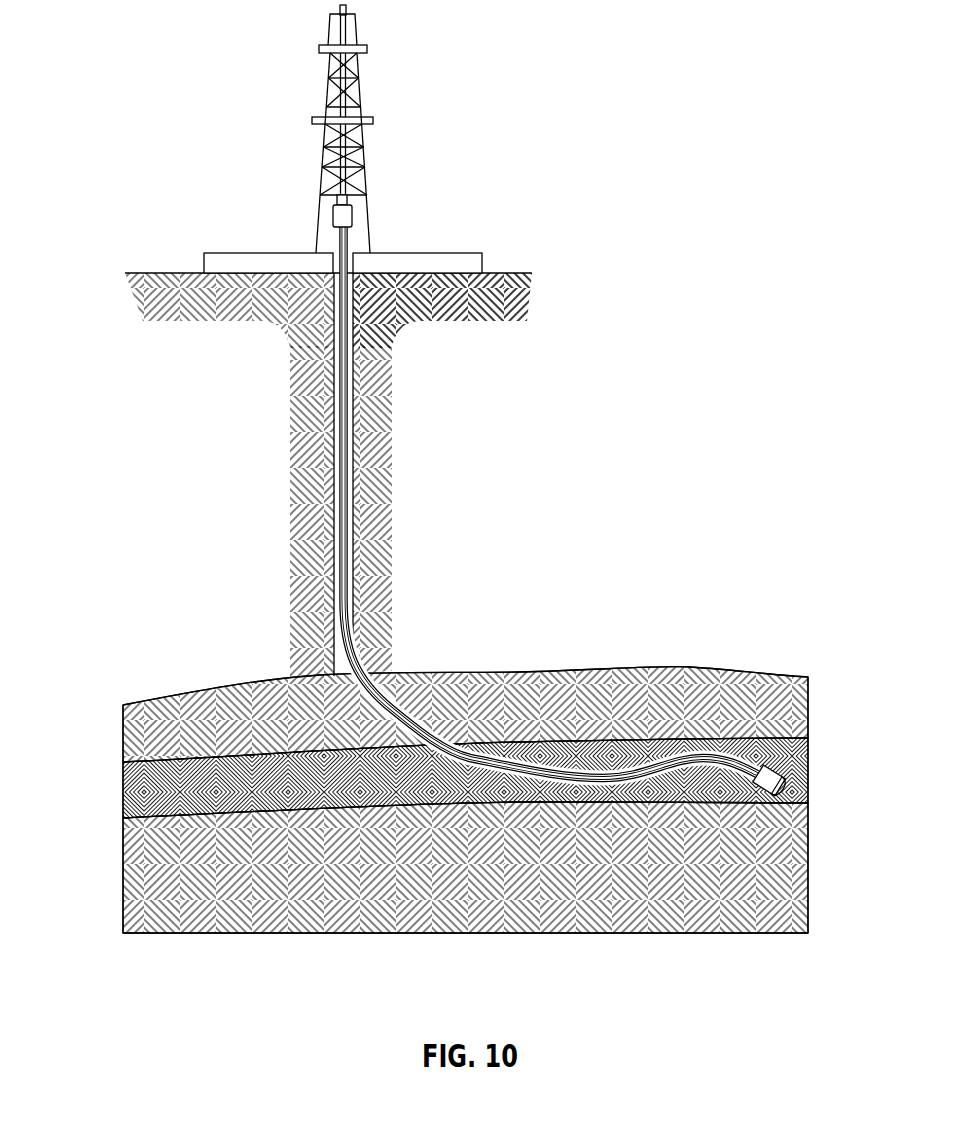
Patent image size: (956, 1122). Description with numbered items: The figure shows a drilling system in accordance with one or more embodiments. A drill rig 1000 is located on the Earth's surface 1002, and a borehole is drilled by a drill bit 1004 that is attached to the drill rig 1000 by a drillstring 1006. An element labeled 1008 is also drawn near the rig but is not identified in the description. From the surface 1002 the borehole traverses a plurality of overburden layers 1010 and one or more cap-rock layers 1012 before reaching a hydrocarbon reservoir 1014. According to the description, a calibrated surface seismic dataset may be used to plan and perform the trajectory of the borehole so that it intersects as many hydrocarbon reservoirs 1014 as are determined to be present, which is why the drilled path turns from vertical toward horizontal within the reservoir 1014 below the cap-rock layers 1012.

The drill rig 1000 is at (366, 147).
The Earth's surface 1002 is at (520, 272).
The drill bit 1004 is at (330, 412).
The drillstring 1006 is at (777, 770).
The injector head 1008 is at (347, 237).
The overburden layers 1010 is at (385, 404).
The cap-rock layers 1012 is at (133, 730).
The hydrocarbon reservoir 1014 is at (133, 805).